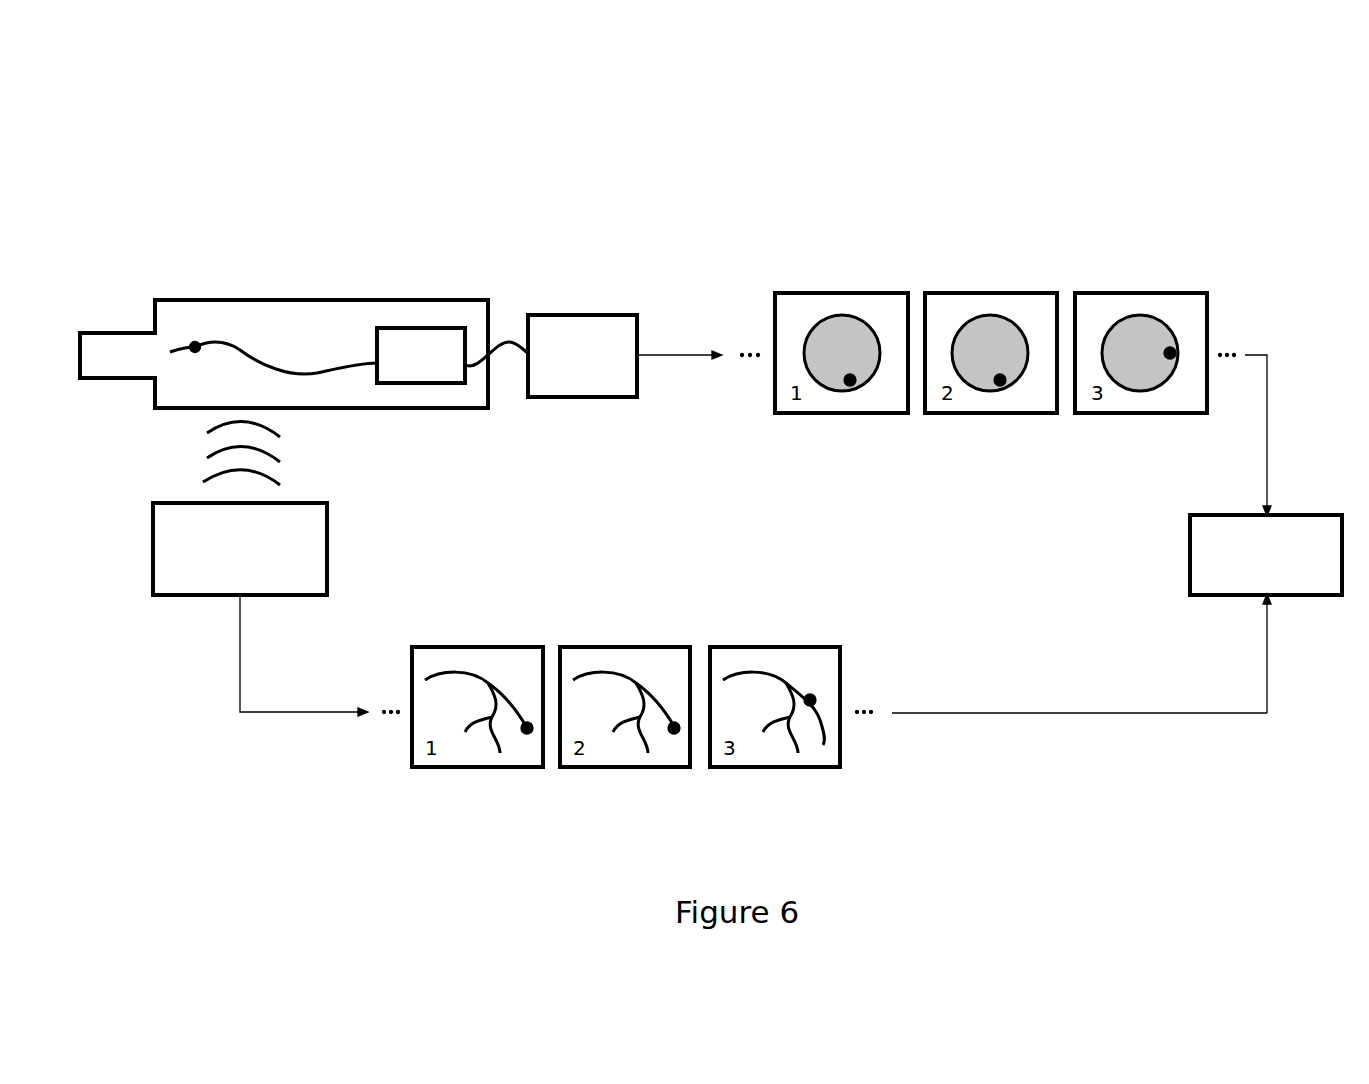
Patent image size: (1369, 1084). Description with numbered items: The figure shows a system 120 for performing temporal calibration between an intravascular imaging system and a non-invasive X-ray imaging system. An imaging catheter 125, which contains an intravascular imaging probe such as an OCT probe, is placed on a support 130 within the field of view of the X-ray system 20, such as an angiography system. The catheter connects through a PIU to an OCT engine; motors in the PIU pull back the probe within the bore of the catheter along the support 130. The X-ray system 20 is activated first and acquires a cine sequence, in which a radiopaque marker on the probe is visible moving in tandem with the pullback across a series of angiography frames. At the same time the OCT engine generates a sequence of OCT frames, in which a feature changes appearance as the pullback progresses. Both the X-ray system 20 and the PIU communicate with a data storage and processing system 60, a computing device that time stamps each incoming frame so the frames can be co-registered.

The support 130 is at (102, 333).
The imaging catheter 125 is at (275, 360).
The system 120 is at (655, 225).
The X-ray system 20 is at (327, 560).
The data storage and processing system 60 is at (1300, 512).